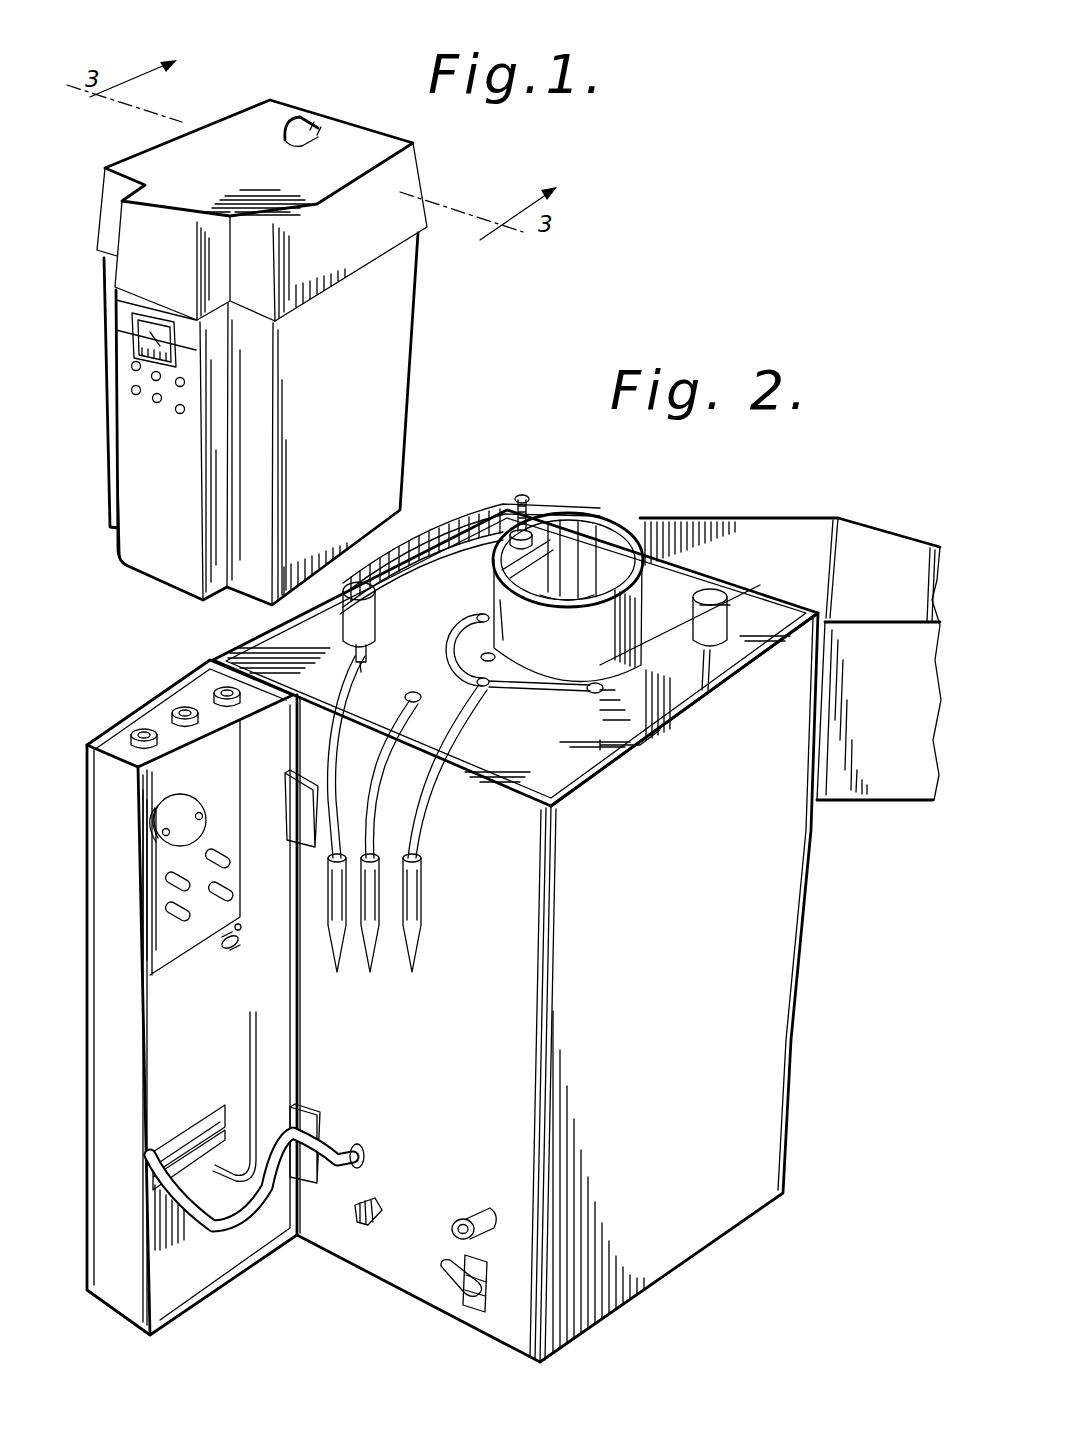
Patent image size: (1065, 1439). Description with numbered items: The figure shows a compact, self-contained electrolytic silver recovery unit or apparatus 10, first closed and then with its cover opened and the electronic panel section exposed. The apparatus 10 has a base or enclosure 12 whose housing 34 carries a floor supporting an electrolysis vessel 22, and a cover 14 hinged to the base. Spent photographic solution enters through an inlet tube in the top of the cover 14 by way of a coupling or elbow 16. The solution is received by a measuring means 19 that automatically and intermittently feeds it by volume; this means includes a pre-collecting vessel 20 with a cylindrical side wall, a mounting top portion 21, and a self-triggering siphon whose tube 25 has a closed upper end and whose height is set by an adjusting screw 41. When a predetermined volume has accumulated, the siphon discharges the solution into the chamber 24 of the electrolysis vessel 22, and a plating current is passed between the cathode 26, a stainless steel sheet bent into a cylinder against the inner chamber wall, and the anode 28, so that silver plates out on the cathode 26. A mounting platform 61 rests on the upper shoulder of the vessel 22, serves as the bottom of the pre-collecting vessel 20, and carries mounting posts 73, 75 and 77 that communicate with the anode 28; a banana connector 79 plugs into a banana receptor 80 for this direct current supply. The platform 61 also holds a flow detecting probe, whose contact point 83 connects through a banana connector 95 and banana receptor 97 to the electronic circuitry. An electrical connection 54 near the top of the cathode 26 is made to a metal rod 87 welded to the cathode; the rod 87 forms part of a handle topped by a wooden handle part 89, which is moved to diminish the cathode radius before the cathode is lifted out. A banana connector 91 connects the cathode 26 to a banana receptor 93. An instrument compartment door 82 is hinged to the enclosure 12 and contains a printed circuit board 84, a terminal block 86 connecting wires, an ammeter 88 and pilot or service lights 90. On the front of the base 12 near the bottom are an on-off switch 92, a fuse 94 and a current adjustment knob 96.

In FIG. 1, the silver recovery unit 10 is at (256, 76).
In FIG. 2, the silver recovery unit 10 is at (830, 903).
In FIG. 1, the base 12 is at (403, 388).
In FIG. 2, the base 12 is at (795, 1035).
In FIG. 1, the cover 14 is at (377, 243).
In FIG. 2, the cover 14 is at (872, 530).
In FIG. 1, the coupling or elbow 16 is at (303, 126).
In FIG. 2, the measuring means 19 is at (588, 503).
In FIG. 2, the pre-collecting vessel 20 is at (600, 508).
In FIG. 2, the mounting top portion 21 is at (545, 520).
In FIG. 2, the electrolysis vessel 22 is at (428, 578).
In FIG. 2, the chamber 24 is at (677, 693).
In FIG. 2, the tube 25 is at (530, 577).
In FIG. 2, the cathode 26 is at (470, 578).
In FIG. 2, the anode 28 is at (650, 700).
In FIG. 1, the housing 34 is at (350, 328).
In FIG. 2, the housing 34 is at (695, 1208).
In FIG. 2, the adjusting screw 41 is at (522, 497).
In FIG. 2, the electrical connection 54 is at (368, 652).
In FIG. 2, the mounting platform 61 is at (677, 580).
In FIG. 2, the mounting post 73 is at (483, 617).
In FIG. 2, the mounting post 75 is at (490, 658).
In FIG. 2, the mounting post 77 is at (640, 745).
In FIG. 2, the banana connector 79 is at (420, 955).
In FIG. 2, the banana receptor 80 is at (128, 737).
In FIG. 1, the instrument compartment door 82 is at (138, 433).
In FIG. 2, the instrument compartment door 82 is at (98, 1028).
In FIG. 2, the contact point 83 is at (408, 697).
In FIG. 2, the printed circuit board 84 is at (168, 1103).
In FIG. 2, the terminal block 86 is at (188, 1146).
In FIG. 2, the metal rod 87 is at (355, 652).
In FIG. 1, the ammeter 88 is at (130, 325).
In FIG. 2, the ammeter 88 is at (165, 815).
In FIG. 2, the wooden handle part 89 is at (343, 621).
In FIG. 1, the pilot or service lights 90 is at (152, 398).
In FIG. 2, the pilot or service lights 90 is at (165, 878).
In FIG. 2, the banana connector 91 is at (342, 975).
In FIG. 2, the on-off switch 92 is at (445, 1280).
In FIG. 2, the banana receptor 93 is at (212, 690).
In FIG. 2, the fuse 94 is at (462, 1212).
In FIG. 2, the banana connector 95 is at (378, 975).
In FIG. 2, the current adjustment knob 96 is at (357, 1227).
In FIG. 2, the banana receptor 97 is at (170, 715).